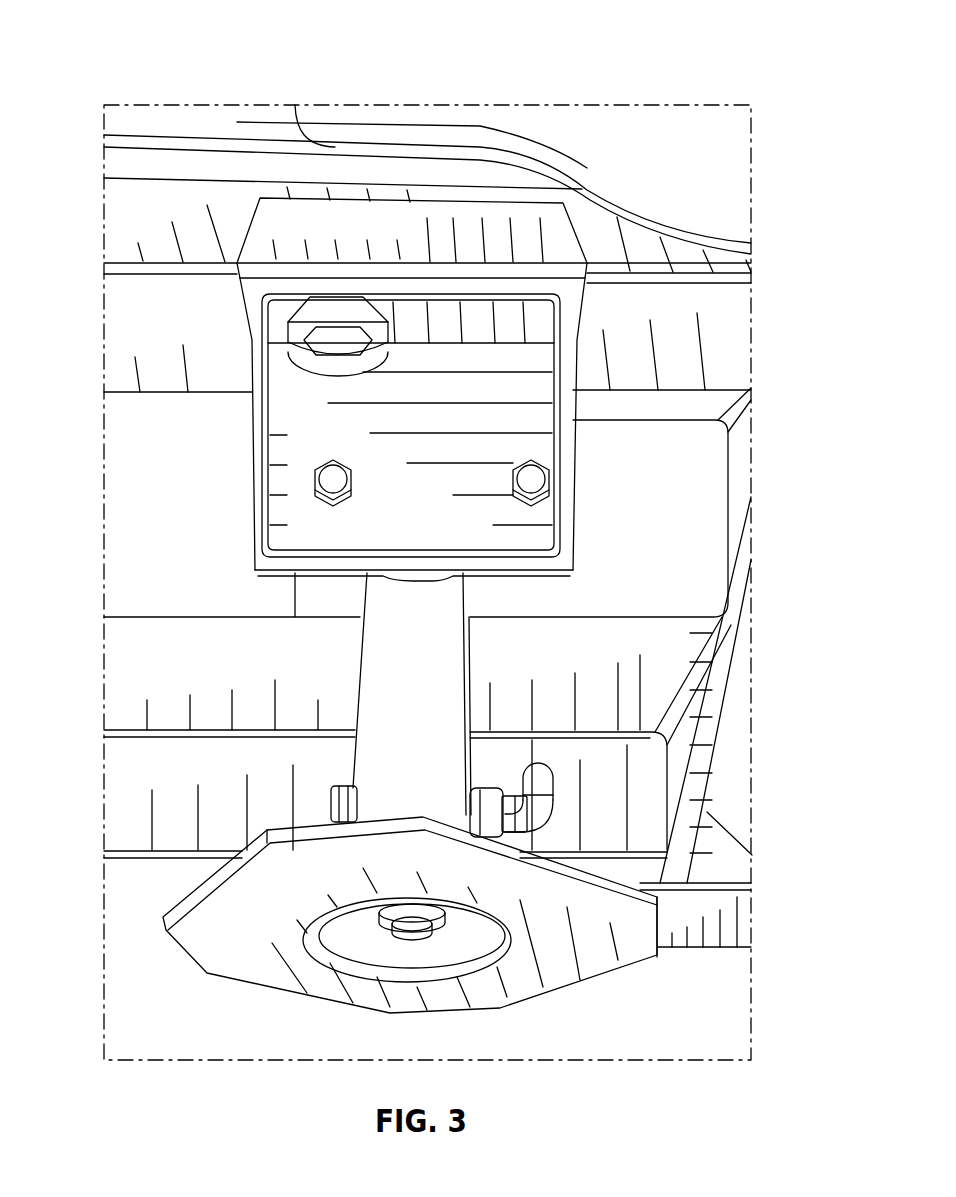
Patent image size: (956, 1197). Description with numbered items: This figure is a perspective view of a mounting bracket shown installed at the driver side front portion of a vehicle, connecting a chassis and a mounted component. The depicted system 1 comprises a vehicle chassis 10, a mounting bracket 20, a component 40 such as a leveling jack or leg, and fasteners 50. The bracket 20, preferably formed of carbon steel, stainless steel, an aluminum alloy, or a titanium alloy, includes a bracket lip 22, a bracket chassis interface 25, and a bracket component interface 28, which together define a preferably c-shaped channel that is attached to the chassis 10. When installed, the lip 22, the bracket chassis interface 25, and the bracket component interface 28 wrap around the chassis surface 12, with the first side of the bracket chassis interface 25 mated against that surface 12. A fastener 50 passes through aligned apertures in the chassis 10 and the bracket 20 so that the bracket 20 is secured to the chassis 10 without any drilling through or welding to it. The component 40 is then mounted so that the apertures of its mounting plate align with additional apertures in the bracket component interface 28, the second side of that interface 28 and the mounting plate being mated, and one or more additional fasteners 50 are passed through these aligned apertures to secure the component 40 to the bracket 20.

The system 1 is at (112, 58).
The vehicle chassis 10 is at (731, 316).
The surface 12 is at (190, 331).
The mounting bracket 20 is at (573, 438).
The bracket lip 22 is at (430, 217).
The bracket chassis interface 25 is at (528, 336).
The bracket component interface 28 is at (537, 513).
The component 40 is at (367, 692).
The fastener 50 is at (343, 362).